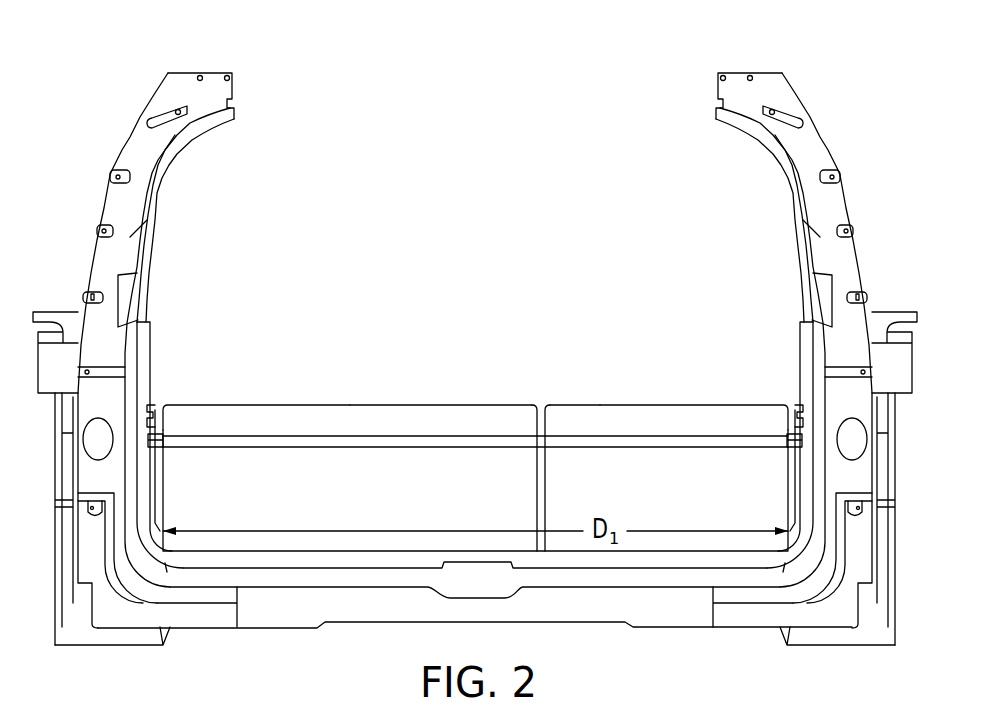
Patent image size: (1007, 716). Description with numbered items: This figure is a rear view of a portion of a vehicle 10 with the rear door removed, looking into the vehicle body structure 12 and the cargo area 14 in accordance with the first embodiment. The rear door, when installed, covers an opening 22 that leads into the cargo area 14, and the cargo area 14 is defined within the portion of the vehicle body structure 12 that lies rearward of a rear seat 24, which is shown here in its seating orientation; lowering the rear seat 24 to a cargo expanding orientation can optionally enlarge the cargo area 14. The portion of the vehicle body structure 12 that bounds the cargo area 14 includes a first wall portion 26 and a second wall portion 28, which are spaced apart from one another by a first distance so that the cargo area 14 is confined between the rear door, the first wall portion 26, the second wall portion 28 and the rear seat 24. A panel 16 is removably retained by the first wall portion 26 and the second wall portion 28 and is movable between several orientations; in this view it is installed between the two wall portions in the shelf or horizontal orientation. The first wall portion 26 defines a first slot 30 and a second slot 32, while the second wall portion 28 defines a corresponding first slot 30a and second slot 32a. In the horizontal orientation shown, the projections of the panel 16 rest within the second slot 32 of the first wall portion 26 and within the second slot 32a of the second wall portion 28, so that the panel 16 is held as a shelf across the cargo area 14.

The vehicle 10 is at (757, 42).
The vehicle body structure 12 is at (838, 124).
The cargo area 14 is at (390, 502).
The panel 16 is at (312, 443).
The opening 22 is at (148, 250).
The rear seat 24 is at (601, 405).
The first wall portion 26 is at (146, 405).
The second wall portion 28 is at (804, 405).
The first slot 30 is at (198, 418).
The first slot 30a is at (722, 425).
The second slot 32 is at (162, 441).
The second slot 32a is at (786, 441).